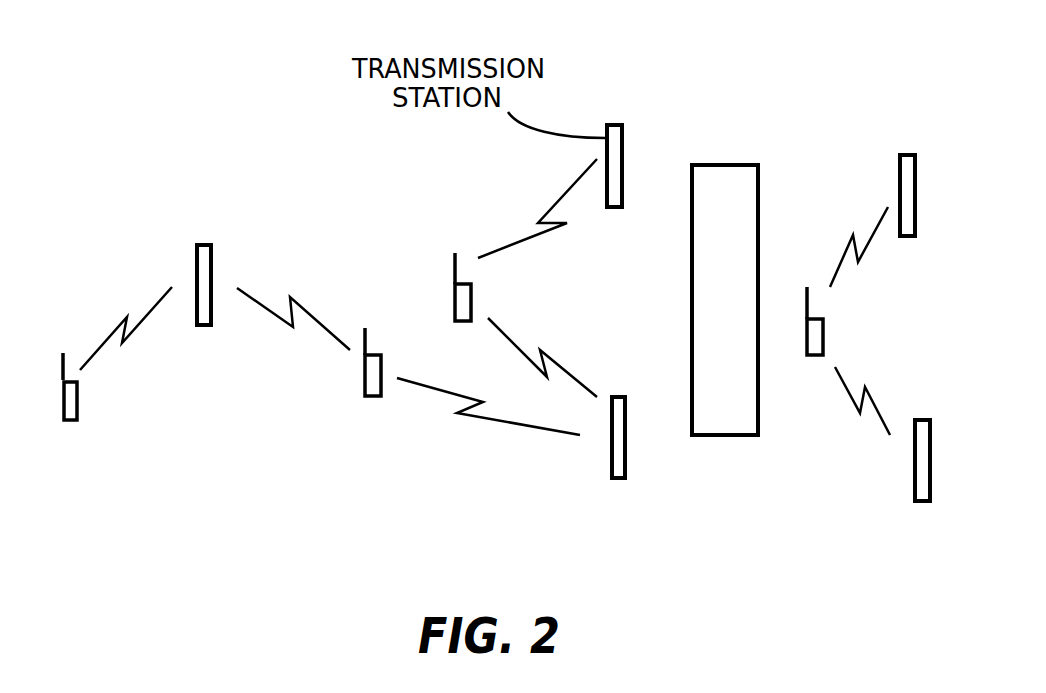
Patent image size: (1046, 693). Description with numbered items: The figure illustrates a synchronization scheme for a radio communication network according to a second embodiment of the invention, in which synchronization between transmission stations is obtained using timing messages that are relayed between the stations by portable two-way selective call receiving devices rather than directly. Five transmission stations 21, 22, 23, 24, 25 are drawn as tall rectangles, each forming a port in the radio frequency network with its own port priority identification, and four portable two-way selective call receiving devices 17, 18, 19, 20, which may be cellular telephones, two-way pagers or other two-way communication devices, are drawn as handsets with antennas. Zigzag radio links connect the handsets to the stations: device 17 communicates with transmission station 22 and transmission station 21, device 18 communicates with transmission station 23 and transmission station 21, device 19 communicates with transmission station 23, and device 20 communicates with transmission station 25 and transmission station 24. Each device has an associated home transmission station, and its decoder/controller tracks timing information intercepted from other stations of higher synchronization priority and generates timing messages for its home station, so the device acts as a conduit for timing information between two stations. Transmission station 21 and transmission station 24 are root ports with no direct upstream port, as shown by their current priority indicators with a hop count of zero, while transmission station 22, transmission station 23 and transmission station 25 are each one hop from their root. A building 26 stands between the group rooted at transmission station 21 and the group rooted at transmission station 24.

The portable two-way selective call receiving device 17 is at (453, 297).
The portable two-way selective call receiving device 18 is at (363, 380).
The portable two-way selective call receiving device 19 is at (80, 403).
The portable two-way selective call receiving device 20 is at (825, 340).
The transmission station 21 is at (610, 462).
The transmission station 22 is at (670, 108).
The transmission station 23 is at (262, 222).
The transmission station 24 is at (913, 475).
The transmission station 25 is at (898, 176).
The building 26 is at (760, 205).